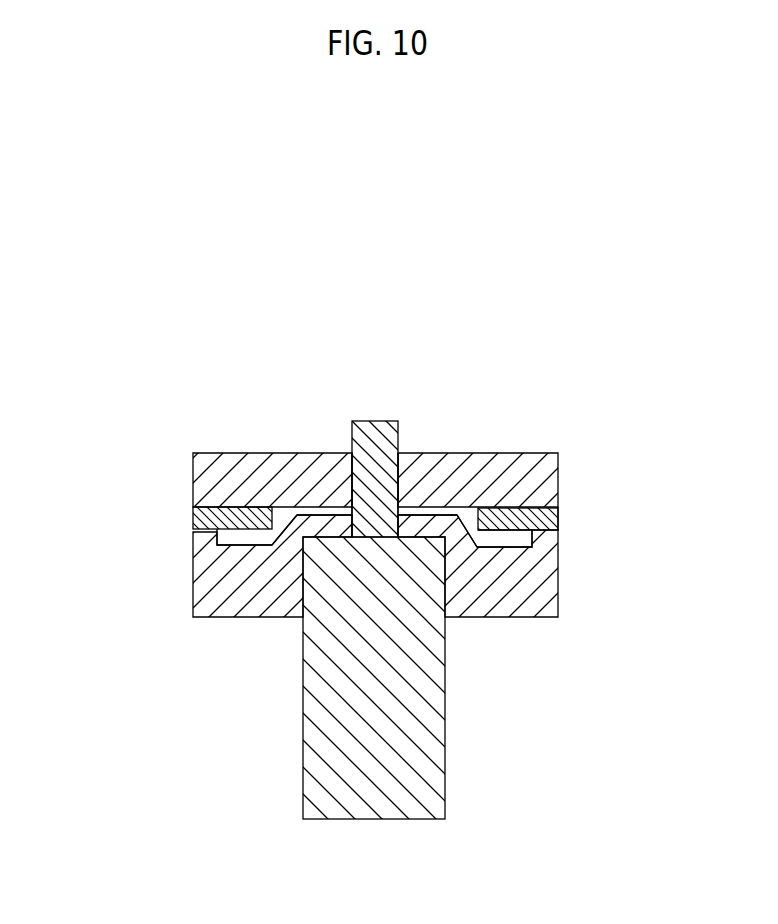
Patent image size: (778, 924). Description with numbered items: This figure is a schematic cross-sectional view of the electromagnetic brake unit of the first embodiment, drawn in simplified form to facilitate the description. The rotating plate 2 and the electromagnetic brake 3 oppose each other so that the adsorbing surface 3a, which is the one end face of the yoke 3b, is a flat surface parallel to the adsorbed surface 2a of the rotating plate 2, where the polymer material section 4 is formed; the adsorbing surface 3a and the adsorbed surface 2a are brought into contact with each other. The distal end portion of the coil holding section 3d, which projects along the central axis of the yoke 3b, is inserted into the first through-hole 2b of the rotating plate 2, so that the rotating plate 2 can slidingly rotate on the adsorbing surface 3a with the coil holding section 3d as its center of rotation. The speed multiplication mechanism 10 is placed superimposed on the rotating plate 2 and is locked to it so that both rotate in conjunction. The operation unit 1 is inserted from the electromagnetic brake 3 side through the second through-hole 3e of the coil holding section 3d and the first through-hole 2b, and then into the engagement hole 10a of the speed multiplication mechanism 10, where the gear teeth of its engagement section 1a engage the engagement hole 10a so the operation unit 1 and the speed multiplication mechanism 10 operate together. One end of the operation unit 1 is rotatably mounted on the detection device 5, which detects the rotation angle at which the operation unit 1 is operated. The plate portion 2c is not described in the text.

The speed multiplication mechanism 10 is at (341, 526).
The engagement hole 10a is at (392, 478).
The operation unit 1 is at (357, 415).
The engagement section 1a is at (359, 420).
The rotating plate 2 is at (303, 412).
The adsorbed surface 2a is at (287, 553).
The polymer material section 4 is at (374, 538).
The first through-hole 2b is at (478, 508).
The left plate portion 2c is at (242, 515).
The electromagnetic brake 3 is at (302, 559).
The yoke 3b is at (193, 582).
The adsorbing surface 3a is at (558, 507).
The coil holding section 3d is at (415, 515).
The second through-hole 3e is at (413, 508).
The detection device 5 is at (405, 820).